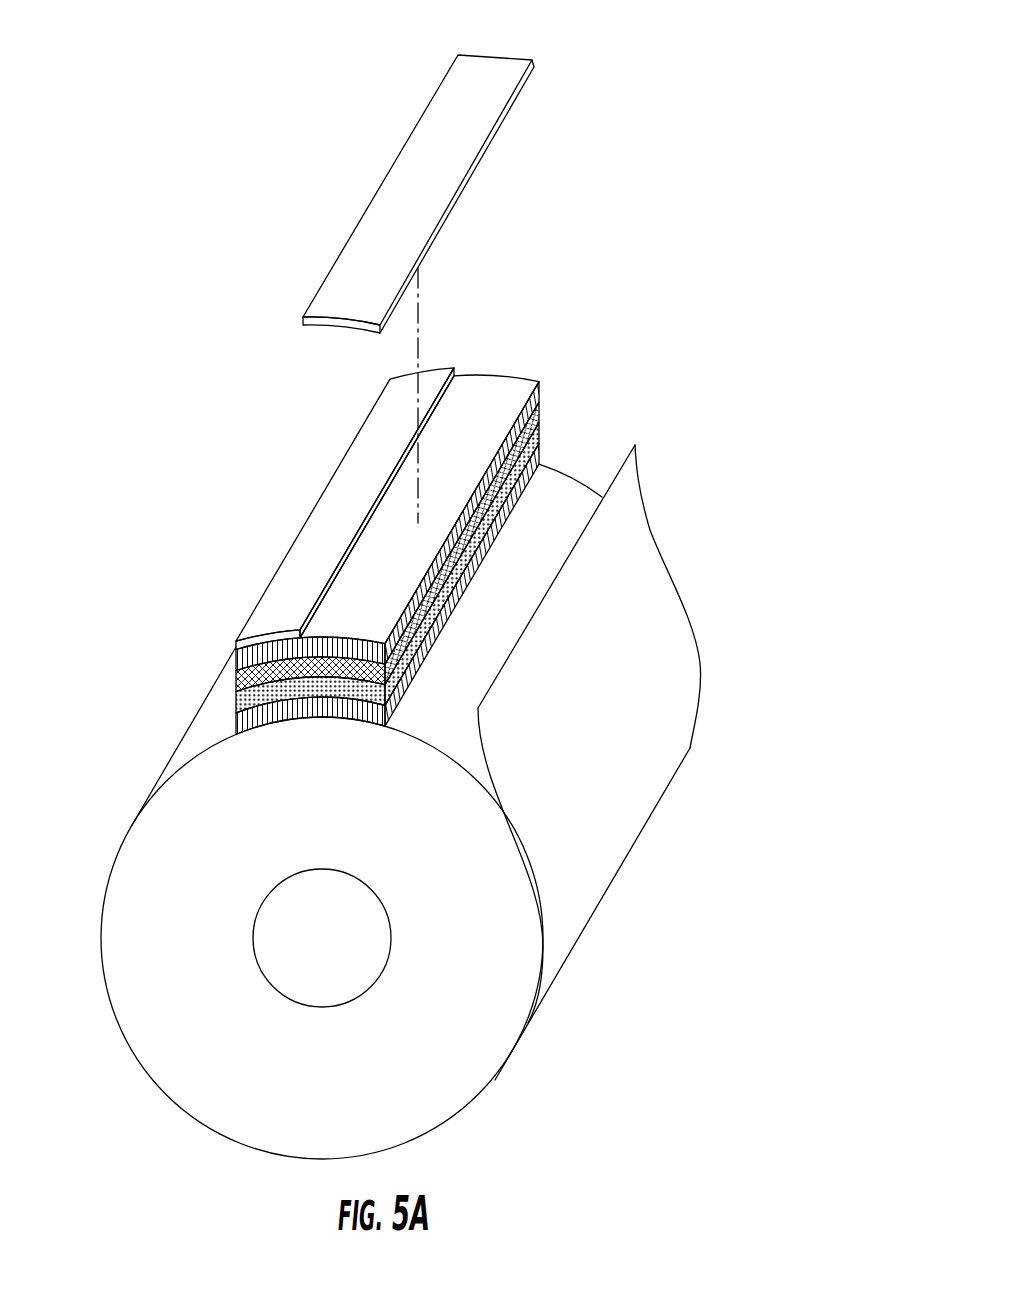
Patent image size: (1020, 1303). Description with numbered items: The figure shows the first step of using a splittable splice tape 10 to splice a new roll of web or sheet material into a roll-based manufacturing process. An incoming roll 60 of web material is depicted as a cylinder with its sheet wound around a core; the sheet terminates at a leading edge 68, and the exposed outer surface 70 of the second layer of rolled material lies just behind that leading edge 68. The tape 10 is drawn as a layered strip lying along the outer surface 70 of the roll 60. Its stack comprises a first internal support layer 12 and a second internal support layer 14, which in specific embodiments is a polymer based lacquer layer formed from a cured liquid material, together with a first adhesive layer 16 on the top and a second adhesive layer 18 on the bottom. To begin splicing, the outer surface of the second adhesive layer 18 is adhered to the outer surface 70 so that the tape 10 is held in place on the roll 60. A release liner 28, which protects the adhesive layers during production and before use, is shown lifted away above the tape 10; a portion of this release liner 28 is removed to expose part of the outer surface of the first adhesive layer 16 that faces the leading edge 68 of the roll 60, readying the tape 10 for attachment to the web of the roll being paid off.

The splittable splice tape 10 is at (150, 600).
The first internal support layer 12 is at (233, 682).
The second internal support layer 14 is at (233, 703).
The first adhesive layer 16 is at (493, 393).
The second adhesive layer 18 is at (233, 728).
The release liner 28 is at (498, 77).
The roll 60 is at (753, 651).
The leading edge 68 is at (635, 445).
The outer surface 70 is at (569, 473).